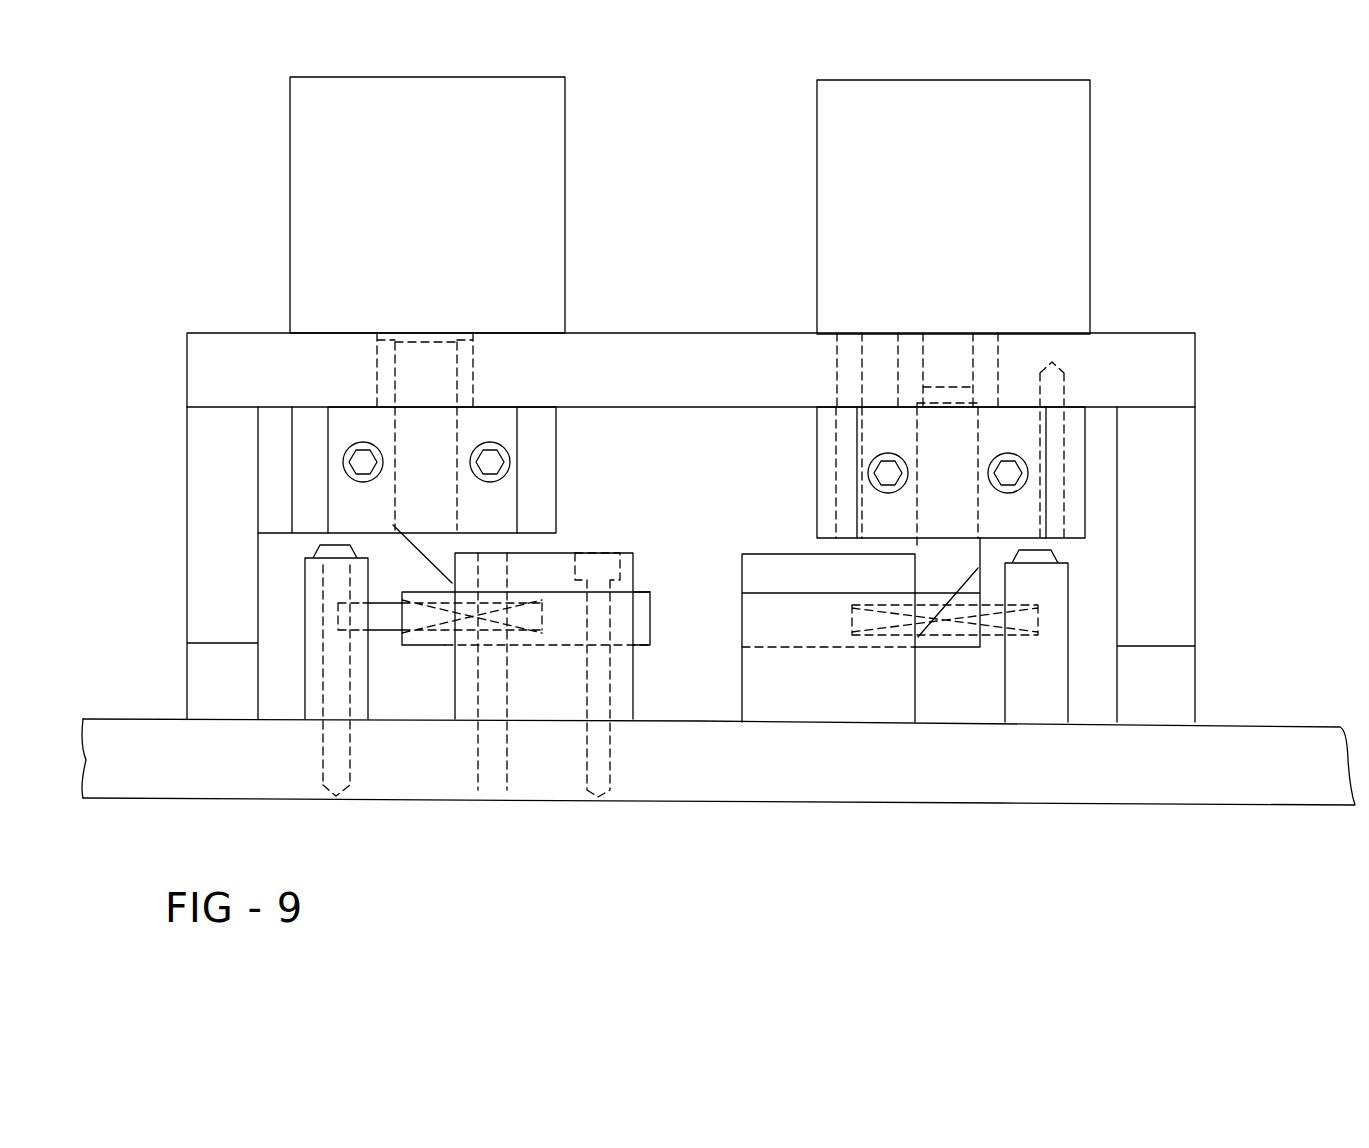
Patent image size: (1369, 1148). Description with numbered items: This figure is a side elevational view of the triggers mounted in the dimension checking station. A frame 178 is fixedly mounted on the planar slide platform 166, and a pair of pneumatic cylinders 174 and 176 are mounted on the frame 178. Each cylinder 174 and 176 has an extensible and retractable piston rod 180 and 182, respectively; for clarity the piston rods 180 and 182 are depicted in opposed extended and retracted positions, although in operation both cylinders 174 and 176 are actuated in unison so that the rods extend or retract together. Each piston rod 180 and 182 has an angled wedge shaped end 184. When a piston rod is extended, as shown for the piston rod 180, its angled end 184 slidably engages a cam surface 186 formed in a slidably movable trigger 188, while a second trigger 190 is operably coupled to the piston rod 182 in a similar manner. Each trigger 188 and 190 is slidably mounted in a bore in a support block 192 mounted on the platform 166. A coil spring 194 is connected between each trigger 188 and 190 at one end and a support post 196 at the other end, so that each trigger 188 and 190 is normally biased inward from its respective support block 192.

The slide platform 166 is at (1280, 736).
The cylinder 174 is at (1080, 168).
The cylinder 176 is at (560, 197).
The frame 178 is at (1160, 350).
The piston rod 180 is at (967, 556).
The piston rod 182 is at (441, 556).
The angled wedge shaped end 184 is at (452, 583).
The cam surface 186 is at (453, 585).
The trigger 188 is at (770, 633).
The trigger 190 is at (620, 612).
The support block 192 is at (618, 717).
The coil spring 194 is at (385, 632).
The support post 196 is at (1047, 688).